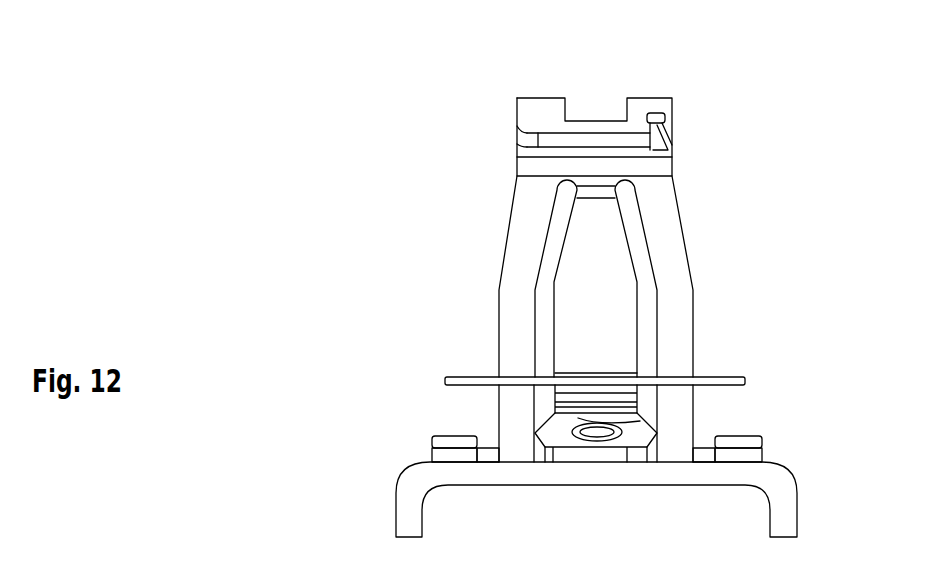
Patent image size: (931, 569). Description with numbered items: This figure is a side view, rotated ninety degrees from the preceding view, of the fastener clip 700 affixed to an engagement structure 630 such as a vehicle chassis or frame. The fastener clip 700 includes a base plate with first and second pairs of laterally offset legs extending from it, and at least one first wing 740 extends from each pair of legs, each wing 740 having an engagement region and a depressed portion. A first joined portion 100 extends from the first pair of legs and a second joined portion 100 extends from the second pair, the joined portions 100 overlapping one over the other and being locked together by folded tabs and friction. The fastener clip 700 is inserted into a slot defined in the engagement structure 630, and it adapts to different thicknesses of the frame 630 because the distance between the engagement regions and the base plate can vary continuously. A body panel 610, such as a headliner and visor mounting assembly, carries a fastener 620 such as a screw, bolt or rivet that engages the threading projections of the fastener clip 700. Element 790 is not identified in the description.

The fastener clip 700 is at (235, 128).
The joined portion 100 is at (640, 103).
The first wing 740 is at (600, 301).
The engagement structure 630 is at (727, 380).
The fastener 620 is at (600, 437).
The ring 790 is at (620, 420).
The body panel 610 is at (777, 510).